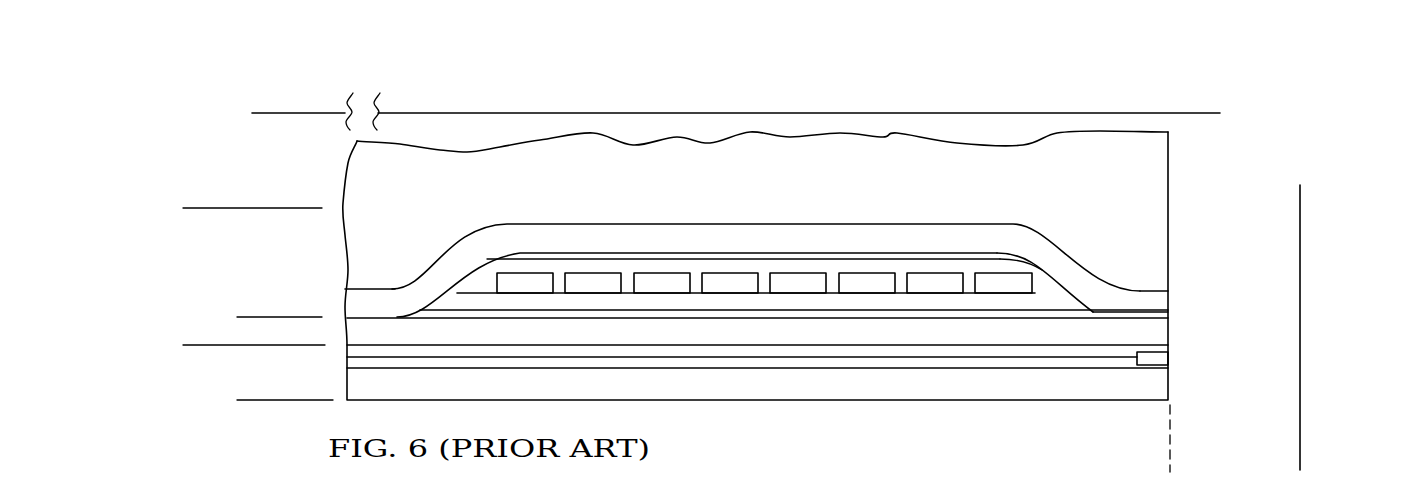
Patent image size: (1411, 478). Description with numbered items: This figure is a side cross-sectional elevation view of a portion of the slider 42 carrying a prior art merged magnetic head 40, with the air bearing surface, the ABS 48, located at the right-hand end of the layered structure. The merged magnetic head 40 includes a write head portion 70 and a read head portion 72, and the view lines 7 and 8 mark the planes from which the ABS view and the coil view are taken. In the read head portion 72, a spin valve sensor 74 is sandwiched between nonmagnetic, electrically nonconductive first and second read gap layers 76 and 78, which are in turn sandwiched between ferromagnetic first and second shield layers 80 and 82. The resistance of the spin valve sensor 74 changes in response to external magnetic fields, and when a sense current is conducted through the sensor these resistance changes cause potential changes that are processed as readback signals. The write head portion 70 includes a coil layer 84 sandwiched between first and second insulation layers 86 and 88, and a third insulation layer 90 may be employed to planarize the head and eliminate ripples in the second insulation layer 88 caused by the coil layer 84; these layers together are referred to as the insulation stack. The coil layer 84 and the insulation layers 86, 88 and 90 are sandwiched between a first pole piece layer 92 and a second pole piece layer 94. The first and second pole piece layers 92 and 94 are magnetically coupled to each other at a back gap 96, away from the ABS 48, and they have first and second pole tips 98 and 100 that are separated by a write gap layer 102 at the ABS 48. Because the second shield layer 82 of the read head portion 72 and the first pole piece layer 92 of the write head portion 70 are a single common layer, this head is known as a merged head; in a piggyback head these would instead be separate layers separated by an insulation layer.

The section line 7- 7 is at (1325, 205).
The section line 8- 8 is at (273, 92).
The merged magnetic head 40 is at (312, 152).
The overcoat layer 42 is at (1150, 165).
The air bearing surface (ABS) 48 is at (1170, 422).
The write head portion 70 is at (273, 298).
The read head portion 72 is at (273, 437).
The spin valve sensor 74 is at (1162, 358).
The first read gap layer 76 is at (835, 368).
The second read gap layer 78 is at (783, 343).
The first shield layer 80 is at (917, 385).
The second shield layer 82 is at (757, 383).
The first pole piece layer 92 is at (990, 333).
The coil layer 84 is at (732, 285).
The first insulation layer 86 is at (715, 302).
The second insulation layer 88 is at (1045, 285).
The third insulation layer 90 is at (523, 258).
The second pole piece layer 94 is at (917, 224).
The back gap 96 is at (370, 317).
The first pole tip 98 is at (1170, 335).
The second pole tip 100 is at (1164, 302).
The write gap layer 102 is at (1170, 311).